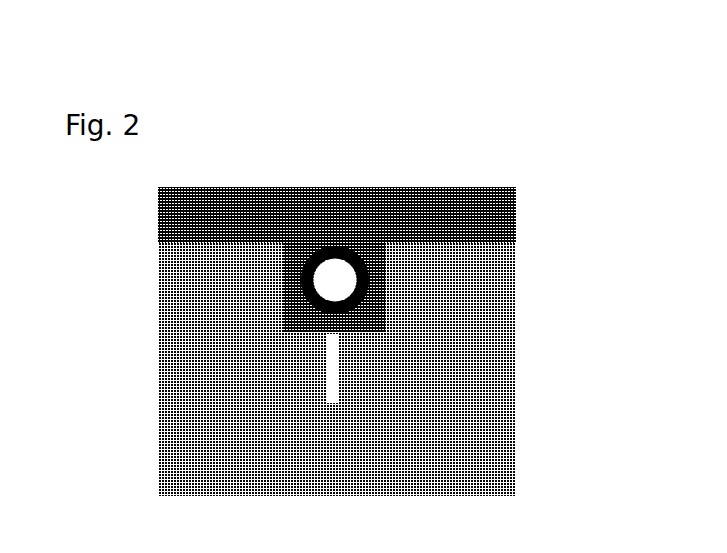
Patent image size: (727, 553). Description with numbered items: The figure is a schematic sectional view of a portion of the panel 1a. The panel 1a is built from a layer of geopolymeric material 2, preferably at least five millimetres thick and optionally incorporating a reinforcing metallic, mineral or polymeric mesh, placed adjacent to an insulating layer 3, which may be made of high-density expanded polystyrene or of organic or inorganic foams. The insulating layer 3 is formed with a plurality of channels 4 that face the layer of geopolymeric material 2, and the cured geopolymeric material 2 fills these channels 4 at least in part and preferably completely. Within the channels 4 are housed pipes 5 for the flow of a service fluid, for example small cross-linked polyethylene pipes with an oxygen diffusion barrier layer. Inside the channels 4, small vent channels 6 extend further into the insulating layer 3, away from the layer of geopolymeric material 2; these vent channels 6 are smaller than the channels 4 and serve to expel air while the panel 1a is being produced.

The panel 1a is at (293, 269).
The layer of geopolymeric material 2 is at (236, 226).
The insulating layer 3 is at (172, 416).
The channels 4 is at (380, 289).
The pipes 5 is at (308, 289).
The small vent channels 6 is at (333, 380).